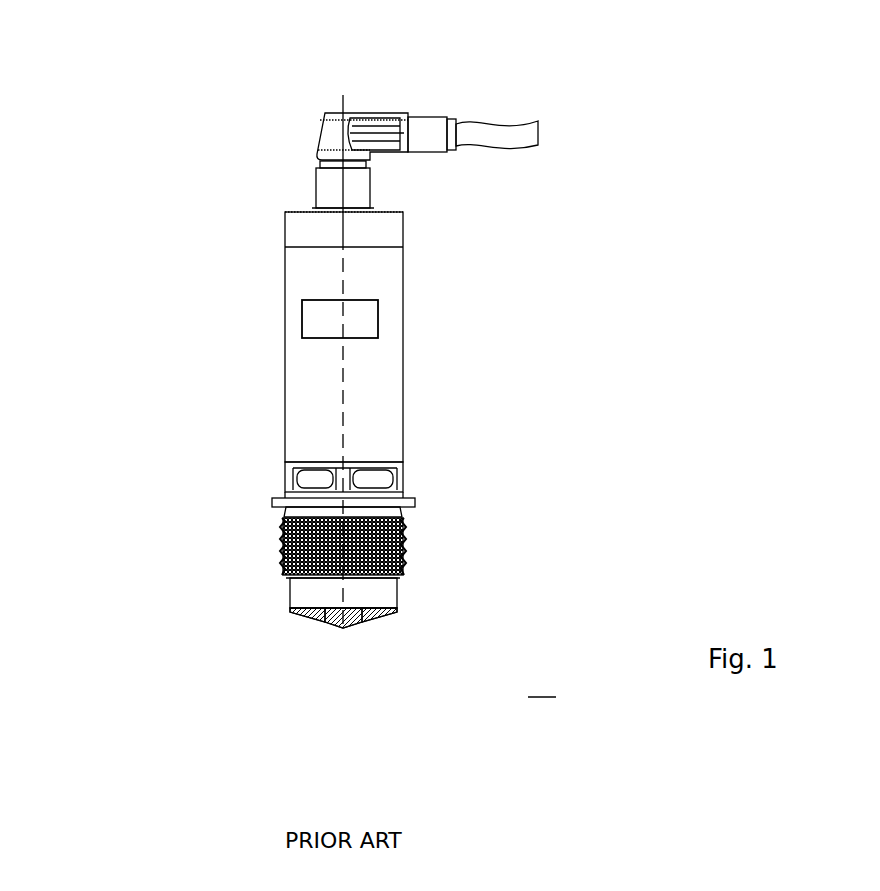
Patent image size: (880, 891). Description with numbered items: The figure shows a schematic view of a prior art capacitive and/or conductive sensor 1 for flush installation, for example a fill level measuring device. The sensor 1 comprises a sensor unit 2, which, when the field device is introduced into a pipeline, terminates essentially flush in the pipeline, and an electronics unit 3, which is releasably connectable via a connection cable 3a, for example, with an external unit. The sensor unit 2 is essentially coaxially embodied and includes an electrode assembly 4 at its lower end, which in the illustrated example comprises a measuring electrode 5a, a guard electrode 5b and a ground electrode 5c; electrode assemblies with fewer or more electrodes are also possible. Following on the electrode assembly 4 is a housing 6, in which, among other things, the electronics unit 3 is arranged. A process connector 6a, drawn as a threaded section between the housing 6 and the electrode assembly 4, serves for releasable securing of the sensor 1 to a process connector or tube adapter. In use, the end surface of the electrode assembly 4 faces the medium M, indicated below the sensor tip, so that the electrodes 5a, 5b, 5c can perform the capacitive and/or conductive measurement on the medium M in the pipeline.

The sensor 1 is at (108, 171).
The sensor unit 2 is at (237, 601).
The electronics unit 3 is at (340, 319).
The connection cable 3a is at (524, 105).
The electrode assembly 4 is at (292, 676).
The measuring electrode 5a is at (345, 631).
The guard electrode 5b is at (379, 622).
The ground electrode 5c is at (302, 626).
The housing 6 is at (260, 371).
The process connector 6a is at (414, 547).
The medium M is at (542, 686).